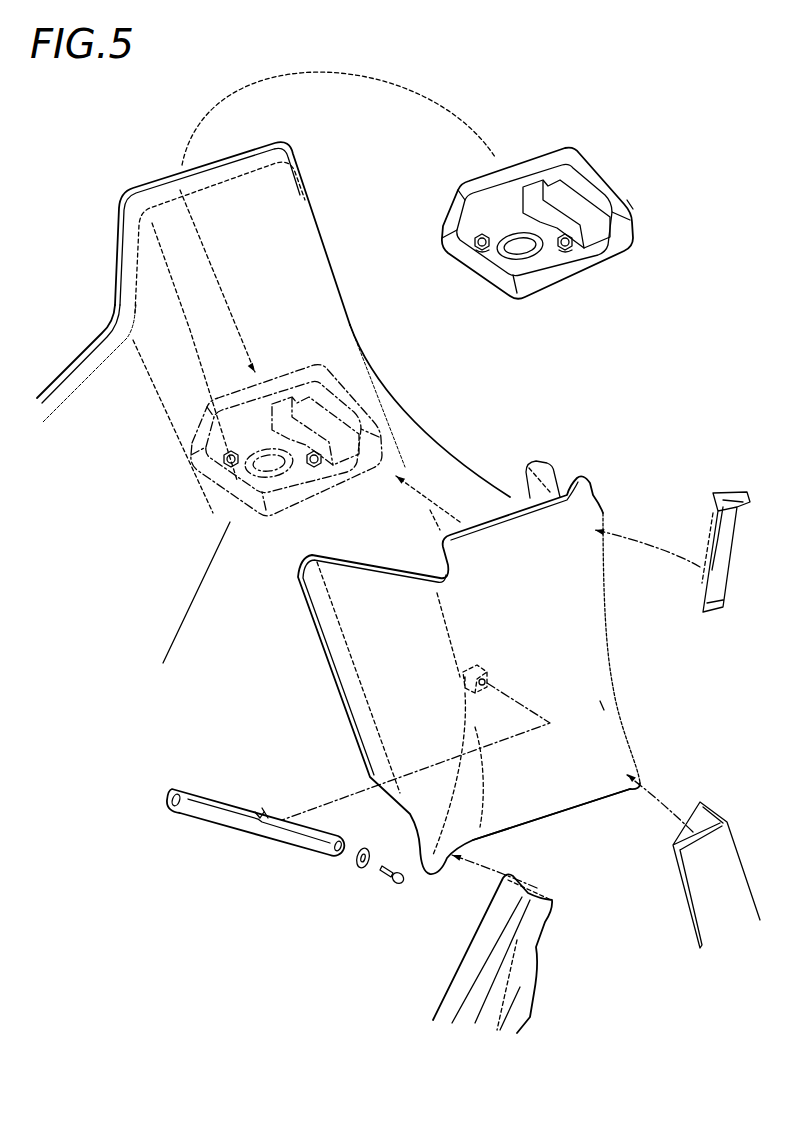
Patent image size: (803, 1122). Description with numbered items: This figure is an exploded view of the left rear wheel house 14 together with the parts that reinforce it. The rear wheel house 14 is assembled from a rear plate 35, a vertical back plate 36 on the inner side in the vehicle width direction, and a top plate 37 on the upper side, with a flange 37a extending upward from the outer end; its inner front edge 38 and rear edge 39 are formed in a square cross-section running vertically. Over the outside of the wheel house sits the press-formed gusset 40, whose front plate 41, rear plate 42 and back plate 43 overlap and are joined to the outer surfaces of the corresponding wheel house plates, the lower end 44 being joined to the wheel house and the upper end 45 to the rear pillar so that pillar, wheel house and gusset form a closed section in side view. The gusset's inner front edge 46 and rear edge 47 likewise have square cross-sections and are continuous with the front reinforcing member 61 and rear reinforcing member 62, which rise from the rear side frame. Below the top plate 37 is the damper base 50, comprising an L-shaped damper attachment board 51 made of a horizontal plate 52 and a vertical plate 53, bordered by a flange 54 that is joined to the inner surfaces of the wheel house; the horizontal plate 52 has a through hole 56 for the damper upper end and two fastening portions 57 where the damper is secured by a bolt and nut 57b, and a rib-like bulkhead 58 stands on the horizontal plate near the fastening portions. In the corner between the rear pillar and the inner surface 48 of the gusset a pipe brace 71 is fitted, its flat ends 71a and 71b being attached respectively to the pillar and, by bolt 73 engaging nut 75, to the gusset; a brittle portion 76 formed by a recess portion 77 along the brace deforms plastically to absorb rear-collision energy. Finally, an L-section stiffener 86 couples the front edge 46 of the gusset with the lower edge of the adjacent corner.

The rear wheel house 14 is at (272, 393).
The rear plate 35 is at (108, 372).
The back plate 36 is at (202, 598).
The top plate 37 is at (133, 187).
The flange 37a is at (170, 185).
The front edge 38 is at (322, 238).
The rear edge 39 is at (200, 370).
The gusset 40 is at (543, 372).
The front plate 41 is at (560, 470).
The rear plate 42 is at (374, 600).
The back plate 43 is at (492, 577).
The lower end 44 is at (567, 793).
The upper end 45 is at (580, 513).
The front edge 46 is at (607, 627).
The rear edge 47 is at (443, 637).
The inner surface 48 is at (602, 705).
The damper base 50 is at (453, 304).
The damper attachment board 51 is at (628, 203).
The horizontal plate 52 is at (633, 233).
The vertical plate 53 is at (575, 160).
The flange 54 is at (513, 163).
The through hole 56 is at (513, 250).
The fastening portion 57 is at (462, 248).
The nut 57b is at (477, 255).
The bulkhead 58 is at (573, 193).
The front reinforcing member 61 is at (700, 893).
The rear reinforcing member 62 is at (517, 1007).
The brace 71 is at (247, 840).
The end of brace 71a is at (177, 813).
The end of brace 71b is at (333, 857).
The bolt 73 is at (400, 884).
The nut 75 is at (482, 680).
The brittle portion 76 is at (265, 807).
The recess portion 77 is at (258, 814).
The stiffener 86 is at (733, 533).